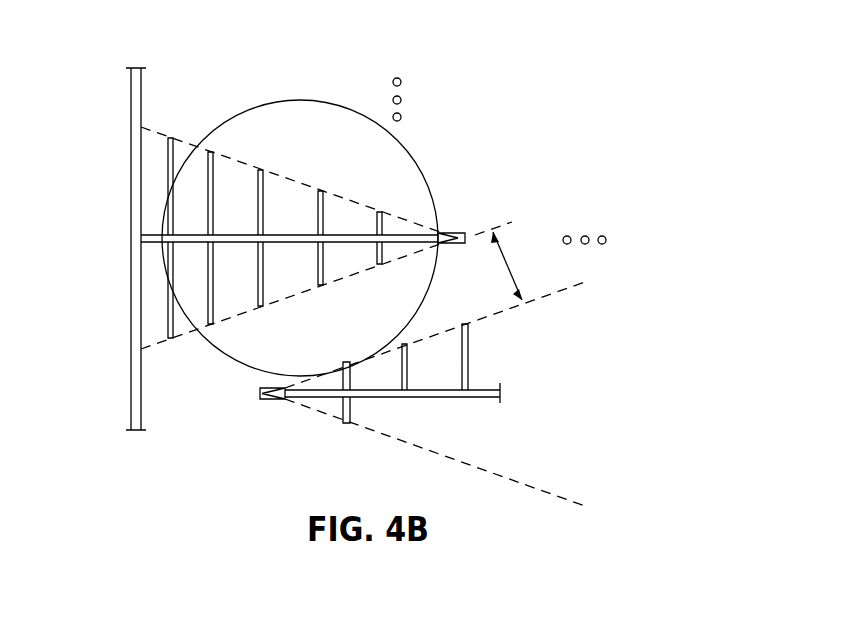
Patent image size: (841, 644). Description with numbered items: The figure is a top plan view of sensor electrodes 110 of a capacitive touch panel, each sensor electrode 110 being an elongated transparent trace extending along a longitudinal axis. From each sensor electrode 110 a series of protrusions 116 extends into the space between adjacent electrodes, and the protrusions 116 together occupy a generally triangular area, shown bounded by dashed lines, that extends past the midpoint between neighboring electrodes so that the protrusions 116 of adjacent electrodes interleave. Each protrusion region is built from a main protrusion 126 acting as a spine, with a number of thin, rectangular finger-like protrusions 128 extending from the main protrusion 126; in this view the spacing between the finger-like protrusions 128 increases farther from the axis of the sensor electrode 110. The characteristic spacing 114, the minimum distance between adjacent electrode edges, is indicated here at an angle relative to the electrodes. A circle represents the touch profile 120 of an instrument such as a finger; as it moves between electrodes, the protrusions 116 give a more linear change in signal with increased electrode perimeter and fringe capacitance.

The sensor electrode 110 is at (304, 242).
The characteristic spacing 114 is at (513, 261).
The protrusions 116 is at (320, 287).
The touch profile 120 is at (412, 150).
The main protrusion 126 is at (350, 238).
The finger-like protrusions 128 is at (255, 203).